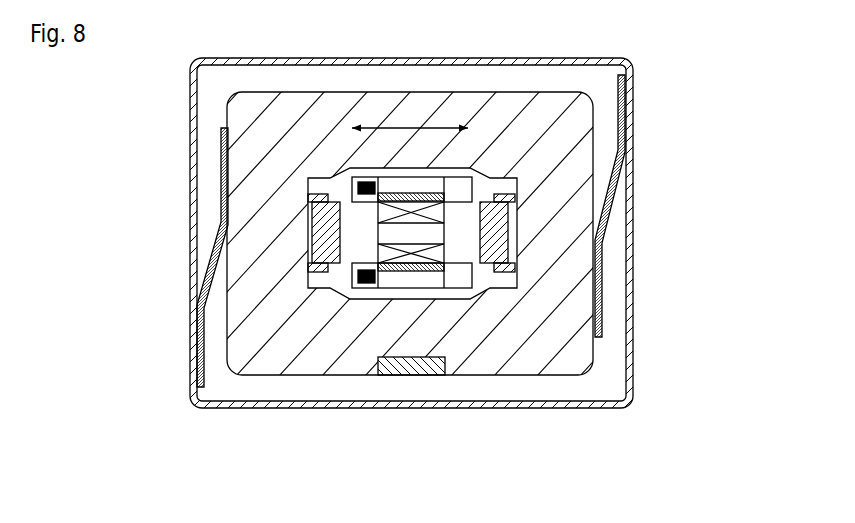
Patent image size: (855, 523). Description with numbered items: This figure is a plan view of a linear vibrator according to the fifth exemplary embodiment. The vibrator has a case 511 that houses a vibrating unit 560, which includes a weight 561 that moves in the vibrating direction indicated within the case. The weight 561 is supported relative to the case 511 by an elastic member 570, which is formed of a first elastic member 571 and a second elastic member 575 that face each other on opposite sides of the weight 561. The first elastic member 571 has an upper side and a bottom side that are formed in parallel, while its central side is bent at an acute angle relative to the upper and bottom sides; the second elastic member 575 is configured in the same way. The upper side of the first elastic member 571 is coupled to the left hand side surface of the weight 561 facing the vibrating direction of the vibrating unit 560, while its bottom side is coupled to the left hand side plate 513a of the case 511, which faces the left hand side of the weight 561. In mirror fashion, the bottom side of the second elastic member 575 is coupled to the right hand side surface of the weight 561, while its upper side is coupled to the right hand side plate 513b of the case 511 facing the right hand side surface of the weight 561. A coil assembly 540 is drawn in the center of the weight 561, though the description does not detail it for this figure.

The case 511 is at (396, 263).
The left hand side plate 513a is at (193, 353).
The right hand side plate 513b is at (632, 133).
The coil assembly 540 is at (437, 252).
The vibrating unit 560 is at (426, 300).
The weight 561 is at (305, 358).
The elastic member 570 is at (421, 231).
The first elastic member 571 is at (207, 260).
The second elastic member 575 is at (615, 207).